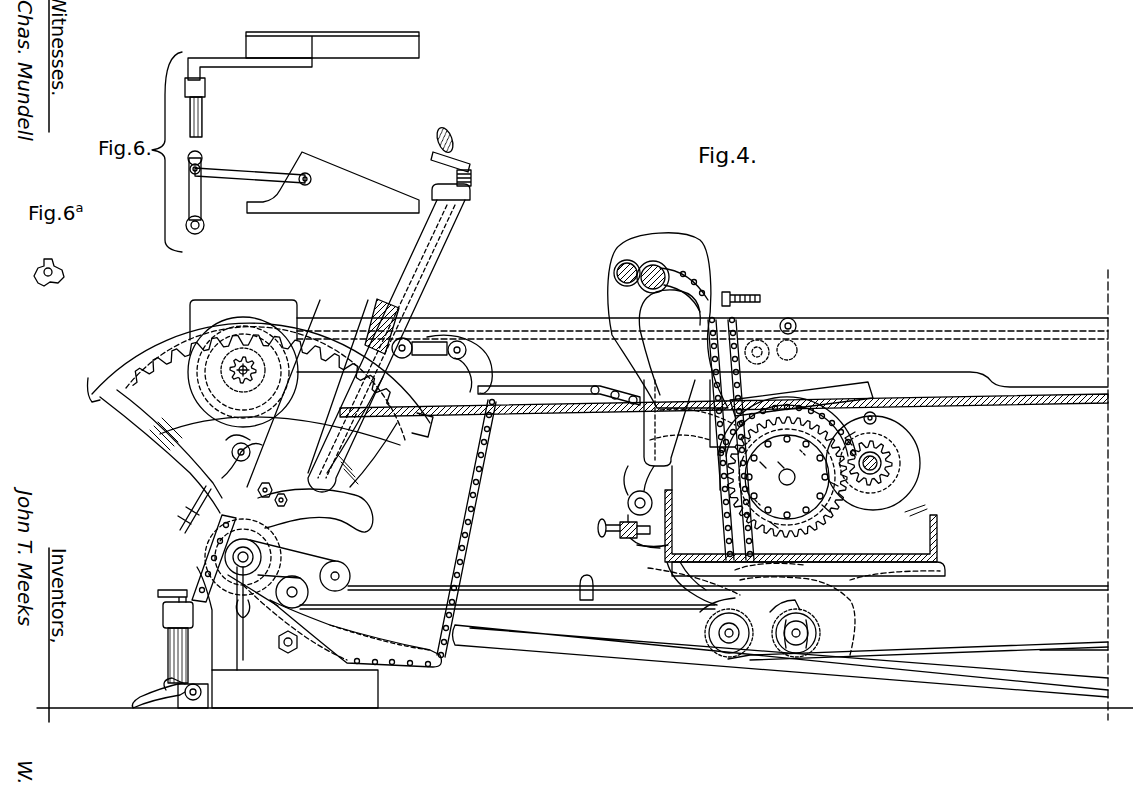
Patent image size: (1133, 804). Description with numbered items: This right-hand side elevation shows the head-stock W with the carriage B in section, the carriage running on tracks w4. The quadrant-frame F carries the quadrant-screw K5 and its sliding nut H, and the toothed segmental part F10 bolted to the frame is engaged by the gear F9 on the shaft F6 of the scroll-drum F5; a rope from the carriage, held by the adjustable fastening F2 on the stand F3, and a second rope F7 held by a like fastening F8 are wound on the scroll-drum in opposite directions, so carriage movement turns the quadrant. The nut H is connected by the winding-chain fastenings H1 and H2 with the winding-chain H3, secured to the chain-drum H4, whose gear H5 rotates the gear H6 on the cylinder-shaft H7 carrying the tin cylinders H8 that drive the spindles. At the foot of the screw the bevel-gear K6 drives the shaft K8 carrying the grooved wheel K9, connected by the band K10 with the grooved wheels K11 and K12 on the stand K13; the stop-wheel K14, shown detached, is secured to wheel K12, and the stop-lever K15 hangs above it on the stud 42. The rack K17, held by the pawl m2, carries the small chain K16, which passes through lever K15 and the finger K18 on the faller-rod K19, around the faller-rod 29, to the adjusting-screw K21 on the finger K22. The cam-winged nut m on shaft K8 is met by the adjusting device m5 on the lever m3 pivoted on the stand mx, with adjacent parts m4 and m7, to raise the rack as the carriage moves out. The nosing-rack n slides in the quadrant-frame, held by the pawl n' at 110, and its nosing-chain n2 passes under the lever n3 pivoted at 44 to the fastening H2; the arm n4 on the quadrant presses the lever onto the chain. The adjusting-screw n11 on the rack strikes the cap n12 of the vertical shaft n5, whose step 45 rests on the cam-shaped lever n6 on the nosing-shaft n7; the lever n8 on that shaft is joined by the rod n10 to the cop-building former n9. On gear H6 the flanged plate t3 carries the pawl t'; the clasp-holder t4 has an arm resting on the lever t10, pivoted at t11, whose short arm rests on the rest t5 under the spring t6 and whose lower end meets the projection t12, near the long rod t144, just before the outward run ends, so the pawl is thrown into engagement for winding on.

In FIG. 6, the nosing-shaft n7 is at (206, 117).
In FIG. 4, the nosing-shaft n7 is at (194, 702).
In FIG. 6, the lever n8 is at (201, 204).
In FIG. 6, the cop-building former n9 is at (355, 38).
In FIG. 6, the rod n10 is at (236, 64).
In FIG. 6A, the stop-wheel K14 is at (62, 262).
In FIG. 4, the stop-wheel K14 is at (710, 652).
In FIG. 4, the frame or head-stock W is at (702, 317).
In FIG. 4, the quadrant-lever F is at (425, 272).
In FIG. 4, the adjustable fastening F2 is at (772, 355).
In FIG. 4, the stand F3 is at (795, 320).
In FIG. 4, the scroll-drum F5 is at (292, 362).
In FIG. 4, the shaft F6 is at (162, 437).
In FIG. 4, the rope F7 is at (520, 338).
In FIG. 4, the fastening F8 is at (744, 352).
In FIG. 4, the gear F9 is at (230, 370).
In FIG. 4, the quadrant-segment F10 is at (165, 370).
In FIG. 4, the sliding nut H is at (407, 338).
In FIG. 4, the winding-chain fastening H1 is at (440, 350).
In FIG. 4, the winding-chain fastening H2 is at (483, 388).
In FIG. 4, the winding-chain H3 is at (600, 385).
In FIG. 4, the chain-drum H4 is at (787, 477).
In FIG. 4, the gear H5 is at (832, 522).
In FIG. 4, the gear H6 is at (886, 478).
In FIG. 4, the cylinder-shaft H7 is at (880, 462).
In FIG. 4, the tin cylinders H8 is at (885, 425).
In FIG. 4, the quadrant-screw K5 is at (378, 302).
In FIG. 4, the bevel-gear K6 is at (258, 556).
In FIG. 4, the short shaft K8 is at (312, 565).
In FIG. 4, the grooved wheel K9 is at (225, 558).
In FIG. 4, the band K10 is at (538, 586).
In FIG. 4, the grooved wheel K11 is at (820, 633).
In FIG. 4, the grooved wheel K12 is at (712, 632).
In FIG. 4, the stand K13 is at (672, 585).
In FIG. 4, the stop-lever K15 is at (818, 592).
In FIG. 4, the small chain K16 is at (682, 546).
In FIG. 4, the rack K17 is at (742, 404).
In FIG. 4, the finger K18 is at (703, 258).
In FIG. 4, the counter or tension faller-rod K19 is at (628, 260).
In FIG. 4, the adjusting-screw K21 is at (748, 297).
In FIG. 4, the finger K22 is at (712, 290).
In FIG. 4, the nut m is at (200, 533).
In FIG. 4, the pawl m2 is at (655, 432).
In FIG. 4, the lever m3 is at (640, 478).
In FIG. 4, the arm m4 is at (638, 548).
In FIG. 4, the adjusting device m5 is at (612, 522).
In FIG. 4, the bracket m7 is at (660, 455).
In FIG. 4, the stand mx is at (653, 503).
In FIG. 4, the nosing-rack n is at (351, 346).
In FIG. 4, the pawl n' is at (225, 446).
In FIG. 4, the nosing-chain n2 is at (215, 540).
In FIG. 4, the lever n3 is at (392, 644).
In FIG. 4, the arm n4 is at (358, 507).
In FIG. 4, the vertical shaft n5 is at (168, 656).
In FIG. 4, the cam-shaped lever n6 is at (148, 696).
In FIG. 4, the adjusting-screw n11 is at (178, 505).
In FIG. 4, the cap n12 is at (160, 598).
In FIG. 4, the pawl t' is at (885, 417).
In FIG. 4, the flanged plate t3 is at (900, 478).
In FIG. 4, the clasp-holder t4 is at (757, 465).
In FIG. 4, the rest t5 is at (824, 515).
In FIG. 4, the spring t6 is at (832, 488).
In FIG. 4, the lever t10 is at (769, 531).
In FIG. 4, the pivot t11 is at (776, 461).
In FIG. 4, the projection t12 is at (596, 530).
In FIG. 4, the guide bar t144 is at (1060, 678).
In FIG. 4, the faller-rod 29 is at (656, 263).
In FIG. 4, the stud 42 is at (878, 585).
In FIG. 4, the pivot 44 is at (297, 642).
In FIG. 4, the step 45 is at (170, 680).
In FIG. 4, the pivot 110 is at (232, 453).
In FIG. 4, the carriage B is at (805, 533).
In FIG. 4, the tracks w4 is at (930, 519).